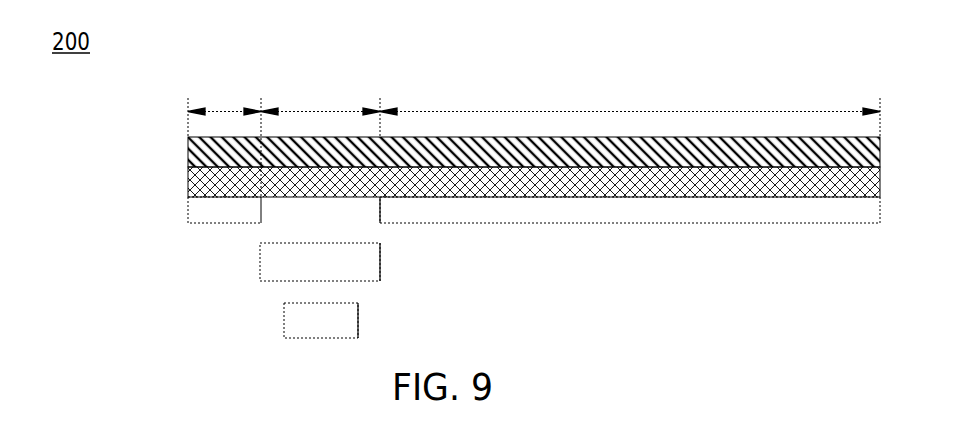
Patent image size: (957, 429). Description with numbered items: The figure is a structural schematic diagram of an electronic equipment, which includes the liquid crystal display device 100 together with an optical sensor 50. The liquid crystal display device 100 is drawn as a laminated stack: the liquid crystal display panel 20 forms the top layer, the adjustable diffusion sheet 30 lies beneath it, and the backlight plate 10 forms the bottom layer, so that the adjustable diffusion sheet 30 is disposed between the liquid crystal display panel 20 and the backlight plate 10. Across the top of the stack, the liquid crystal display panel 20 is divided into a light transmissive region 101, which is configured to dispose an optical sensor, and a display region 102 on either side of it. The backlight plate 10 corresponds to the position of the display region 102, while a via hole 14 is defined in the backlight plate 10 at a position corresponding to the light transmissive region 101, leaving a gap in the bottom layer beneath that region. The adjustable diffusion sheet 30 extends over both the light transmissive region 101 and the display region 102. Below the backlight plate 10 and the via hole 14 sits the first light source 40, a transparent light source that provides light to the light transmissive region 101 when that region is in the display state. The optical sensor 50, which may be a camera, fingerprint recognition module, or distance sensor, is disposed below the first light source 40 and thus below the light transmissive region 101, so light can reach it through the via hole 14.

The liquid crystal display device 100 is at (117, 110).
The liquid crystal display panel 20 is at (188, 143).
The adjustable diffusion sheet 30 is at (188, 180).
The backlight plate 10 is at (188, 212).
The via hole 14 is at (292, 206).
The first light source 40 is at (380, 273).
The optical sensor 50 is at (358, 322).
The light transmissive region 101 is at (320, 152).
The display region 102 is at (534, 109).